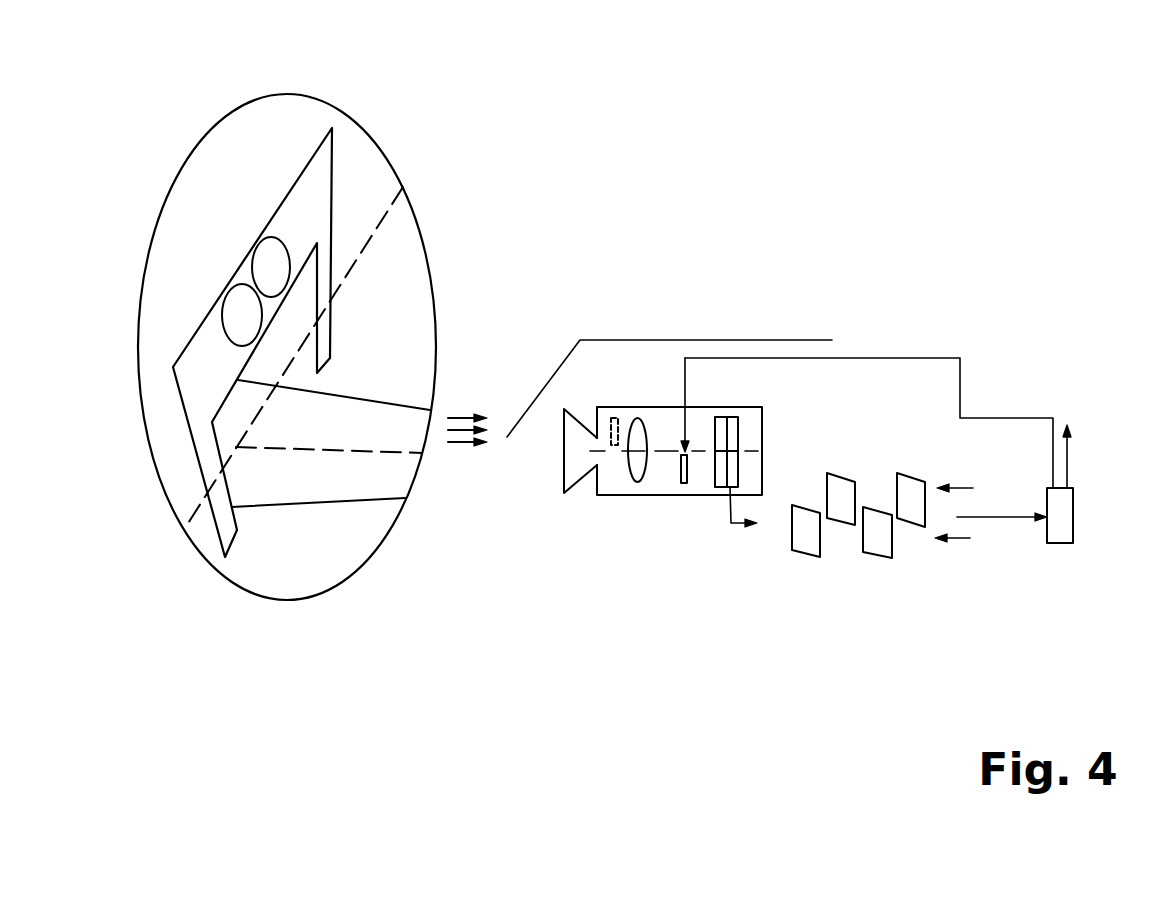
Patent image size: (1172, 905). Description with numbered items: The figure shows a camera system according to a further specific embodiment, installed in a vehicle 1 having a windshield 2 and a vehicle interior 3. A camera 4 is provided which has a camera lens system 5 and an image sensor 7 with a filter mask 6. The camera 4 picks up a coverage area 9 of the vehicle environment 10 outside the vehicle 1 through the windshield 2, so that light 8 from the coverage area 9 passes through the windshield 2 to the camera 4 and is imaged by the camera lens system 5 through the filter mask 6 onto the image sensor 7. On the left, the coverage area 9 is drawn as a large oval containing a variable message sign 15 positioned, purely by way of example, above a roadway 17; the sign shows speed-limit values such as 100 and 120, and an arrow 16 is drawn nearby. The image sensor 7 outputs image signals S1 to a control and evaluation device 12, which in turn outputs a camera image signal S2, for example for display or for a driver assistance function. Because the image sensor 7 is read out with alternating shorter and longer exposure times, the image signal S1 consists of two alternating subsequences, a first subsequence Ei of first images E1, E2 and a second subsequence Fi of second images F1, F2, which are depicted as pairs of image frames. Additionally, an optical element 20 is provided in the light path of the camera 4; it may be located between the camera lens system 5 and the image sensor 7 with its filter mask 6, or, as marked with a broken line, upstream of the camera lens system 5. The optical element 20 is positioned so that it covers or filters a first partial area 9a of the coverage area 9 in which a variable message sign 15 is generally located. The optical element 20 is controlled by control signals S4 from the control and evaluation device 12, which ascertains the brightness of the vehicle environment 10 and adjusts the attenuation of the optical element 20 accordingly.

The vehicle 1 is at (792, 340).
The windshield 2 is at (558, 367).
The vehicle interior 3 is at (658, 353).
The camera 4 is at (564, 493).
The camera lens system 5 is at (627, 464).
The filter mask 6 is at (720, 487).
The image sensor 7 is at (733, 417).
The light 8 is at (458, 444).
The coverage area 9 is at (423, 247).
The first partial area 9a is at (372, 172).
The vehicle environment 10 is at (408, 292).
The control and evaluation device 12 is at (1075, 517).
The variable message sign 15 is at (260, 192).
The direction of motion 16 is at (155, 680).
The roadway 17 is at (297, 485).
The optical element 20 is at (615, 407).
The marking value 100 is at (271, 267).
The marking value 120 is at (242, 315).
The image signal S1 is at (731, 523).
The camera image signal S2 is at (1070, 463).
The control signal S4 is at (895, 358).
The first image E1 is at (840, 473).
The first image E2 is at (910, 473).
The second image F1 is at (805, 557).
The second image F2 is at (877, 558).
The first subsequence Ei is at (974, 488).
The second subsequence Fi is at (972, 538).